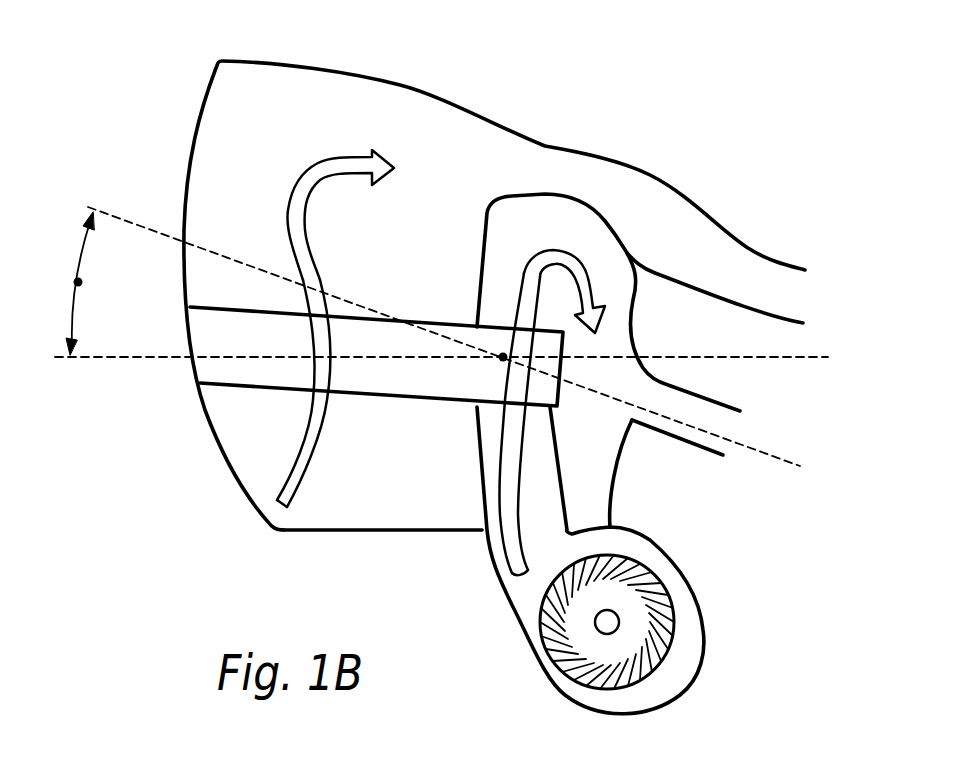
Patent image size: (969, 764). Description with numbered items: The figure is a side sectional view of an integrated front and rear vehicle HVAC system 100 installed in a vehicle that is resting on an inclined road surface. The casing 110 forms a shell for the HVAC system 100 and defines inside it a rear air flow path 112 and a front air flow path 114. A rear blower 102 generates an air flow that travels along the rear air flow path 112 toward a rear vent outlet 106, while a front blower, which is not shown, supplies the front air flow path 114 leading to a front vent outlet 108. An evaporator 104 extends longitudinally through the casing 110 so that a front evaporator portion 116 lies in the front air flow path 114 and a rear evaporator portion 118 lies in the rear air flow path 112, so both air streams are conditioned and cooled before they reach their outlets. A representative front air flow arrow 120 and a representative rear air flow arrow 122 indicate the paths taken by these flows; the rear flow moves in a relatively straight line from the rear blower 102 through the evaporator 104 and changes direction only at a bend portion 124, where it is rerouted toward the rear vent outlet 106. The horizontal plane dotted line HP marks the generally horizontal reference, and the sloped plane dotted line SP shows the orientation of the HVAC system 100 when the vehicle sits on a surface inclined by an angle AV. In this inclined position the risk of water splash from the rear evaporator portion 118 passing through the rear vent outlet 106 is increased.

The integrated front and rear vehicle HVAC system 100 is at (161, 71).
The rear blower 102 is at (690, 666).
The evaporator 104 is at (248, 370).
The rear vent outlet 106 is at (732, 427).
The front vent outlet 108 is at (791, 292).
The casing 110 is at (190, 135).
The rear air flow path 112 is at (582, 459).
The front air flow path 114 is at (276, 434).
The front evaporator portion 116 is at (363, 380).
The rear evaporator portion 118 is at (480, 375).
The representative front air flow arrow 120 is at (290, 218).
The representative rear air flow arrow 122 is at (590, 287).
The bend portion 124 is at (585, 208).
The horizontal plane dotted line HP is at (818, 357).
The sloped plane dotted line SP is at (790, 467).
The incline angle AV is at (77, 281).